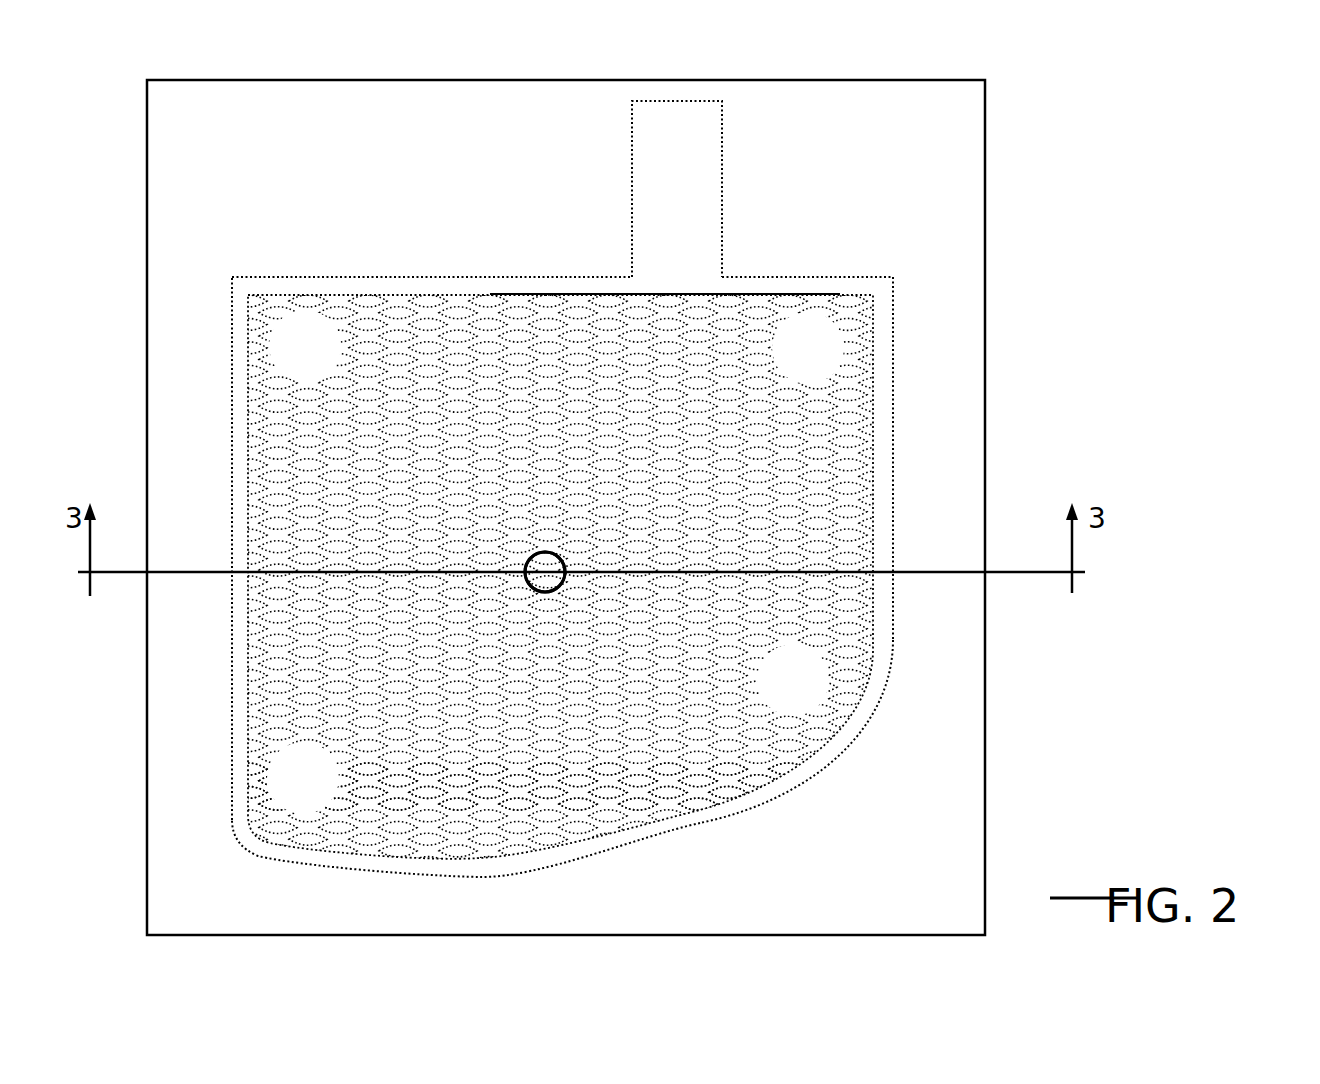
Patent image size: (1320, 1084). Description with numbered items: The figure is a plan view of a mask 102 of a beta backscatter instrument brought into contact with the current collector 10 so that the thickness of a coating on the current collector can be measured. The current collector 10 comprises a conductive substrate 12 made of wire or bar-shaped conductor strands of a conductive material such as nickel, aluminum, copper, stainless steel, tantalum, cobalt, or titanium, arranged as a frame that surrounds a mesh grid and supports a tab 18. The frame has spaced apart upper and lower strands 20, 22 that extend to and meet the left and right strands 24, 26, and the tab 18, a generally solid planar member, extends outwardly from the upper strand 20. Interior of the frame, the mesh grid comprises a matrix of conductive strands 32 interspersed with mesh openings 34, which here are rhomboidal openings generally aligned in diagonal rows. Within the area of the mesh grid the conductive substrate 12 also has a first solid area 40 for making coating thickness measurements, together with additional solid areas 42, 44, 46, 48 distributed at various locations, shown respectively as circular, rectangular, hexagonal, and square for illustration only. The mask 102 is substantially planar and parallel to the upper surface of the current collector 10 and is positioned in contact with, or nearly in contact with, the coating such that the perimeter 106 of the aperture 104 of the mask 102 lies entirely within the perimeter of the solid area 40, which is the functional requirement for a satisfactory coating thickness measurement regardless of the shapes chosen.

The current collector 10 is at (820, 251).
The conductive substrate 12 is at (893, 365).
The tab 18 is at (695, 188).
The upper strand 20 is at (578, 276).
The lower strand 22 is at (583, 853).
The left strand 24 is at (233, 672).
The right strand 26 is at (889, 658).
The conductive strands 32 is at (870, 468).
The mesh openings 34 is at (698, 784).
The first solid area 40 is at (536, 590).
The solid area 42 is at (290, 357).
The solid area 44 is at (793, 359).
The solid area 46 is at (778, 691).
The solid area 48 is at (288, 789).
The mask 102 is at (985, 258).
The aperture 104 is at (547, 552).
The perimeter 106 is at (538, 553).